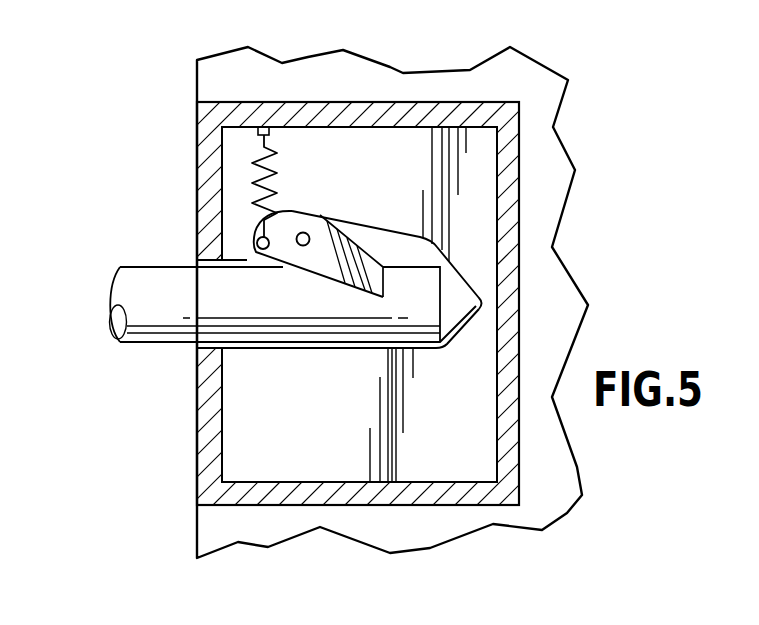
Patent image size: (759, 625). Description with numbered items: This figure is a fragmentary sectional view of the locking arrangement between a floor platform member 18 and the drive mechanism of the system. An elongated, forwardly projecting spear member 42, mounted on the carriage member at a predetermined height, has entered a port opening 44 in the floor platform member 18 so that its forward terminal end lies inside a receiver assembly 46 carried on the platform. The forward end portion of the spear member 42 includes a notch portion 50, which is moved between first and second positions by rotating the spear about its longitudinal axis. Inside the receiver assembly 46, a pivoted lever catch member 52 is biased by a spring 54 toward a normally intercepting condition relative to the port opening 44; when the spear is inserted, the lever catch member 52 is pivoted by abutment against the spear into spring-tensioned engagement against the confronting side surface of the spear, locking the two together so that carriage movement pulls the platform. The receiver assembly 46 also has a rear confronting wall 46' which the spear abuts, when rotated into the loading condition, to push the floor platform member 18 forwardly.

The floor platform member 18 is at (553, 210).
The spear member 42 is at (141, 344).
The port opening 44 is at (194, 263).
The receiver assembly 46 is at (379, 302).
The rear confronting wall 46' is at (419, 304).
The notch portion 50 is at (383, 278).
The lever catch member 52 is at (308, 216).
The spring 54 is at (252, 178).